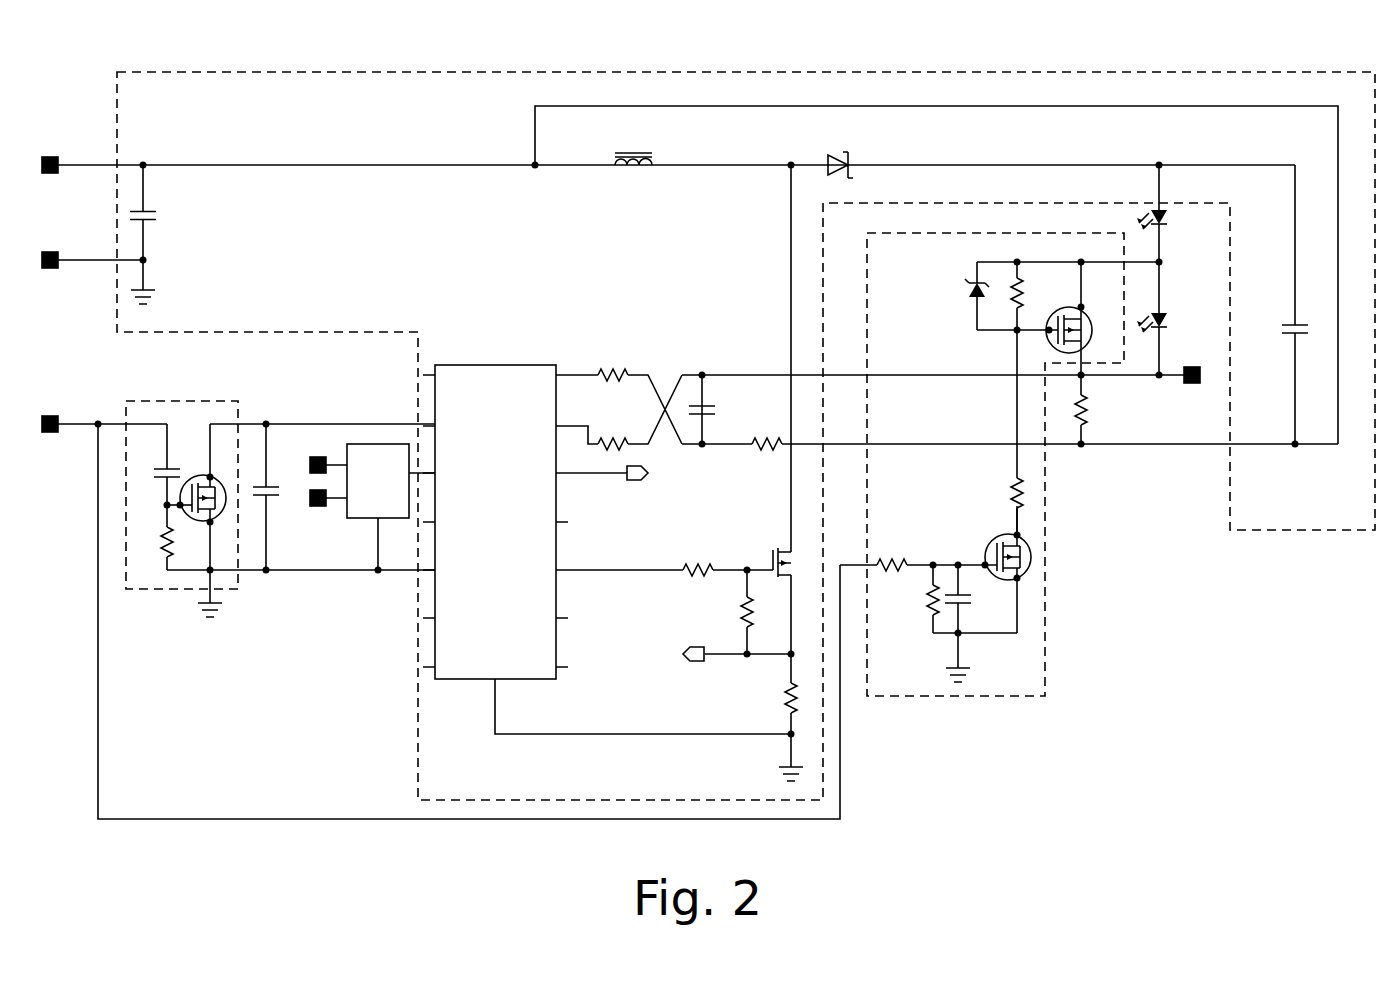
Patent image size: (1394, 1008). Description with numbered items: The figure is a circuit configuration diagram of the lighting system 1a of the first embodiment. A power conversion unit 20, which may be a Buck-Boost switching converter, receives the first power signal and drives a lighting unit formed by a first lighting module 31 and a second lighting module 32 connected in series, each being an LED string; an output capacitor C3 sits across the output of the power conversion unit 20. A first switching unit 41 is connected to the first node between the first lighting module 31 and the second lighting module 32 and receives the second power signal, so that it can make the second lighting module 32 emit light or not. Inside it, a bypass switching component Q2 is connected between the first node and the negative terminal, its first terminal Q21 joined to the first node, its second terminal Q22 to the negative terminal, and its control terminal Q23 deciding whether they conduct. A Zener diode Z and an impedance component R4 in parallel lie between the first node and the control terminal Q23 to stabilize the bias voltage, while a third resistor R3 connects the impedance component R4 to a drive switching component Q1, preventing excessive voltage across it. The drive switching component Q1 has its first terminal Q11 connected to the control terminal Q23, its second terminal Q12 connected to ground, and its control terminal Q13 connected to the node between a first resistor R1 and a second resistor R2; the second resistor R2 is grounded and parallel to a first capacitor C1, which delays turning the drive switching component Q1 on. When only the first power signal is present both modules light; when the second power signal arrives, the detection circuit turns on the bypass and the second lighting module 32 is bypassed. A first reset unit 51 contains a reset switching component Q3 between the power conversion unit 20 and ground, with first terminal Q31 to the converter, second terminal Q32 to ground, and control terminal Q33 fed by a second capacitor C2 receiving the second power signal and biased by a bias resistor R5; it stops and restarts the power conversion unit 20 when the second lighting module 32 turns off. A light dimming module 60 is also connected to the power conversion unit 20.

The lighting system 1a is at (99, 100).
The power conversion unit 20 is at (566, 70).
The first lighting module 31 is at (1166, 213).
The second lighting module 32 is at (1166, 318).
The first switching unit 41 is at (982, 519).
The first reset unit 51 is at (434, 606).
The light dimming module 60 is at (365, 502).
The drive switching component Q1 is at (1001, 569).
The first terminal Q11 is at (1019, 536).
The second terminal Q12 is at (1018, 580).
The control terminal Q13 is at (994, 540).
The bypass switching component Q2 is at (1054, 353).
The first terminal Q21 is at (1083, 306).
The second terminal Q22 is at (1083, 352).
The control terminal Q23 is at (1047, 332).
The reset switching component Q3 is at (212, 497).
The first terminal Q31 is at (212, 476).
The second terminal Q32 is at (212, 523).
The control terminal Q33 is at (181, 507).
The first resistor R1 is at (886, 553).
The second resistor R2 is at (917, 599).
The third resistor R3 is at (1003, 432).
The impedance component R4 is at (1005, 296).
The bias resistor R5 is at (151, 537).
The first capacitor C1 is at (970, 599).
The second capacitor C2 is at (155, 464).
The output capacitor C3 is at (1306, 306).
The Zener diode Z is at (969, 292).